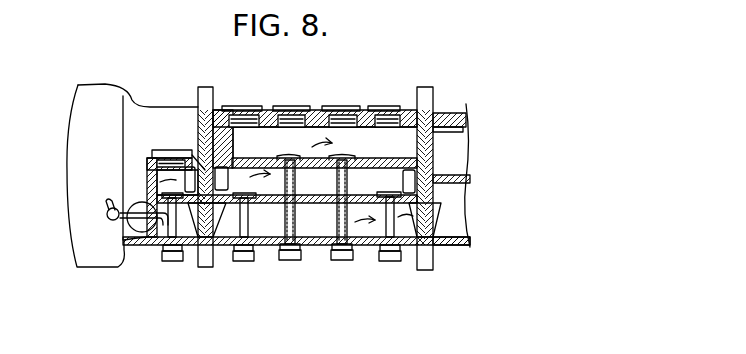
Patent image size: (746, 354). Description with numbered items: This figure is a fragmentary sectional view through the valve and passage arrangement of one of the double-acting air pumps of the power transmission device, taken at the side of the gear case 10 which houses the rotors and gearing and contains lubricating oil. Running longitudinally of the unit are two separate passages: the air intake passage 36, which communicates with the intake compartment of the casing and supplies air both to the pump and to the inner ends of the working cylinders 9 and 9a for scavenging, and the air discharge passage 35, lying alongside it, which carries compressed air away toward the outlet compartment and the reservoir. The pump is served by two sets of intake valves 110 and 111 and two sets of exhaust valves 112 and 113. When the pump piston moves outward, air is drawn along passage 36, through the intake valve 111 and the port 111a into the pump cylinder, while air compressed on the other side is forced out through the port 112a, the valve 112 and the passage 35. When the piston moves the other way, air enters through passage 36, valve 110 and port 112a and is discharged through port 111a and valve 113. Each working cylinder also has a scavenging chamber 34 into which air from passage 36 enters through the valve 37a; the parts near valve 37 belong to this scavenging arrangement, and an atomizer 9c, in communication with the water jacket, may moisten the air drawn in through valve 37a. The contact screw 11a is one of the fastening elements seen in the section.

The cylinder section 9 is at (245, 313).
The cylinder section 9a is at (88, 268).
The atomizer 9c is at (70, 226).
The gear case 10 is at (172, 313).
The contact screw 11a is at (306, 245).
The chamber 34 is at (150, 158).
The air discharge passage 35 is at (432, 141).
The air intake passage 36 is at (432, 222).
The contact cup 37 is at (161, 185).
The valve 37a is at (170, 190).
The intake valve 110 is at (240, 262).
The intake valve 111 is at (391, 262).
The port 111a is at (433, 176).
The exhaust valve 112 is at (290, 153).
The port 112a is at (233, 167).
The exhaust valve 113 is at (341, 158).